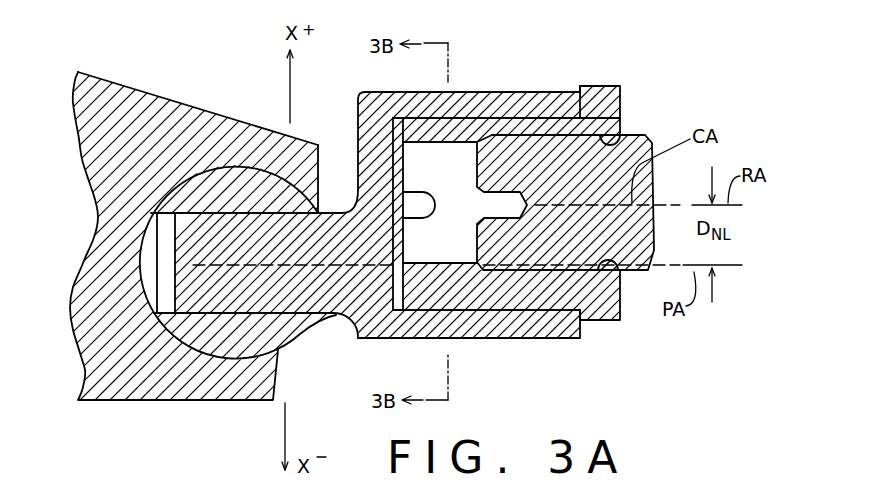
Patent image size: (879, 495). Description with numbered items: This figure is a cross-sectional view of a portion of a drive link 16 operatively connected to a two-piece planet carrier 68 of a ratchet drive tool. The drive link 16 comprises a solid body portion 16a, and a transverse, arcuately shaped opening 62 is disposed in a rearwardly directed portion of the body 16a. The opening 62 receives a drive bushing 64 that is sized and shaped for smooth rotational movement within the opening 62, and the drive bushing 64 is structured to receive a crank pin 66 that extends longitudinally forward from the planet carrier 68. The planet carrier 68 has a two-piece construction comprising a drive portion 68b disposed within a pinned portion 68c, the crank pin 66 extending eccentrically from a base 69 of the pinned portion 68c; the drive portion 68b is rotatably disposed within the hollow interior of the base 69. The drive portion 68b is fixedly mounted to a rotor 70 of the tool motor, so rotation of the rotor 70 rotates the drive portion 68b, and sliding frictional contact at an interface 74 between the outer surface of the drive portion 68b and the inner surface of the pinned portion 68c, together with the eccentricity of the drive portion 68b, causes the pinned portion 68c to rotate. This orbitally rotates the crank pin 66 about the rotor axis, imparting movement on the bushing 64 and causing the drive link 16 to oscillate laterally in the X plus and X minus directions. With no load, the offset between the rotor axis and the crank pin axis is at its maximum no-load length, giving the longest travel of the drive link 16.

The drive link 16 is at (137, 89).
The solid body portion 16a is at (238, 132).
The drive bushing 64 is at (213, 190).
The arcuately shaped opening 62 is at (147, 258).
The crank pin 66 is at (205, 300).
The base 69 is at (372, 110).
The planet carrier 68 is at (561, 88).
The drive portion 68b is at (489, 105).
The pinned portion 68c is at (487, 323).
The frictional interface 74 is at (533, 118).
The rotor 70 is at (590, 178).